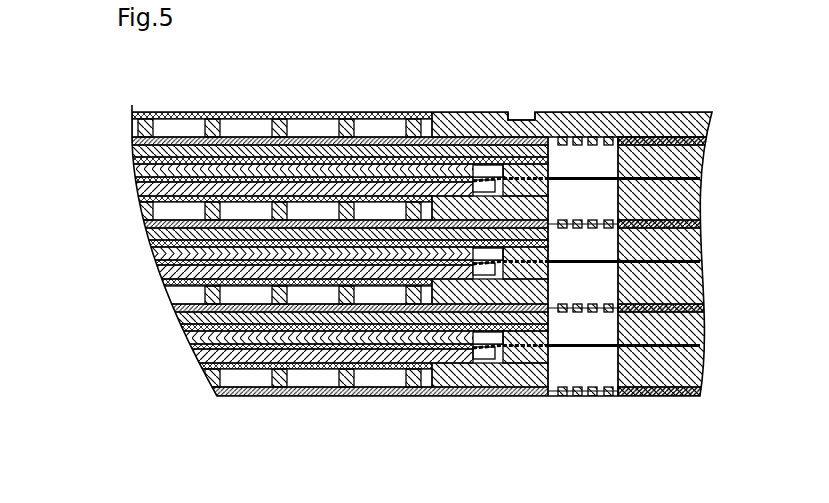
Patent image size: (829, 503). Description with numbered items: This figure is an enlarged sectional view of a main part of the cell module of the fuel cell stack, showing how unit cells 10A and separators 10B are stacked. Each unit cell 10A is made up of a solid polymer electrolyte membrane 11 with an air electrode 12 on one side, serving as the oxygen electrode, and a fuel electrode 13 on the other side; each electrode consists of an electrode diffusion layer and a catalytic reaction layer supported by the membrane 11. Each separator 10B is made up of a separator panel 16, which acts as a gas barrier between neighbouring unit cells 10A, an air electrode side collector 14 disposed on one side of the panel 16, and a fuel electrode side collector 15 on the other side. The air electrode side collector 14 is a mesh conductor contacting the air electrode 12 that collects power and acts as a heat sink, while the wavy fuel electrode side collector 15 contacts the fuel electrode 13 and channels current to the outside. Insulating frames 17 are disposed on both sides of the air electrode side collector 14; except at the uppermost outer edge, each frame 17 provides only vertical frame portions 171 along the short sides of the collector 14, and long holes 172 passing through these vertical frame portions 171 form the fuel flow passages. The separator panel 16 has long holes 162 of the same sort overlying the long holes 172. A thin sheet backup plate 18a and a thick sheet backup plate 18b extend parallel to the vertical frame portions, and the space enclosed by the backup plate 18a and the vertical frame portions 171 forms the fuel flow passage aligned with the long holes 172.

The unit cell 10A is at (374, 387).
The separator 10B is at (366, 259).
The solid polymer electrolyte membrane 11 is at (182, 348).
The air electrode 12 is at (280, 394).
The fuel electrode 13 is at (175, 327).
The air electrode side collector 14 is at (143, 208).
The fuel electrode side collector 15 is at (316, 271).
The separator panel 16 is at (145, 223).
The frame 17 is at (692, 205).
The vertical frame portion 171 is at (572, 112).
The long hole 172 is at (580, 372).
The long hole 162 is at (605, 395).
The thin sheet backup plate 18a is at (483, 357).
The thick sheet backup plate 18b is at (518, 397).